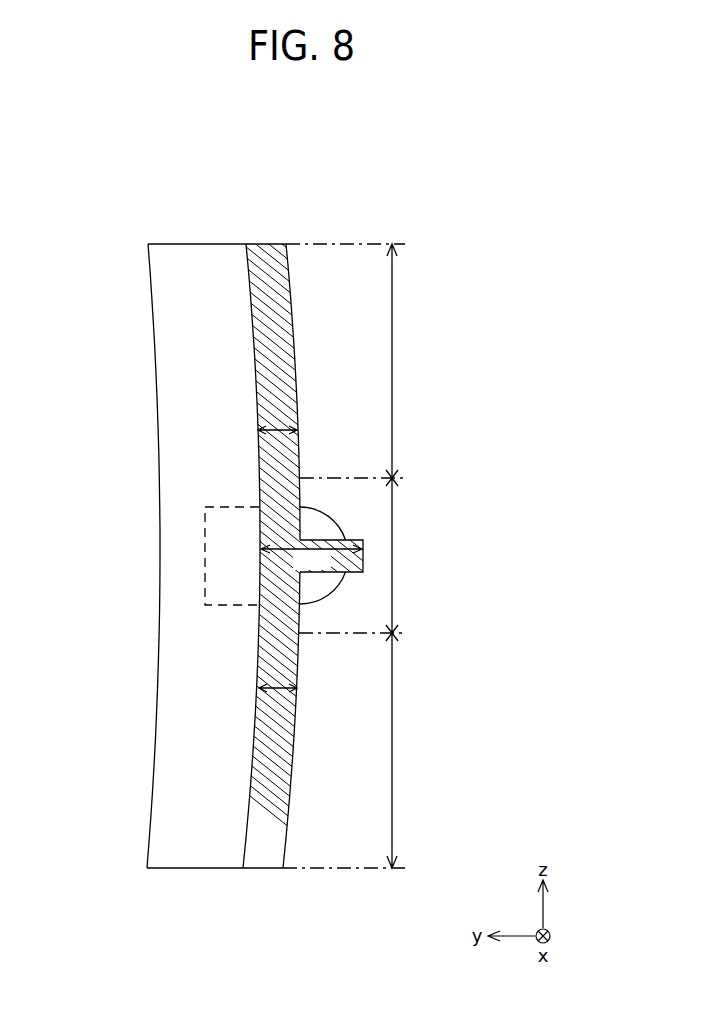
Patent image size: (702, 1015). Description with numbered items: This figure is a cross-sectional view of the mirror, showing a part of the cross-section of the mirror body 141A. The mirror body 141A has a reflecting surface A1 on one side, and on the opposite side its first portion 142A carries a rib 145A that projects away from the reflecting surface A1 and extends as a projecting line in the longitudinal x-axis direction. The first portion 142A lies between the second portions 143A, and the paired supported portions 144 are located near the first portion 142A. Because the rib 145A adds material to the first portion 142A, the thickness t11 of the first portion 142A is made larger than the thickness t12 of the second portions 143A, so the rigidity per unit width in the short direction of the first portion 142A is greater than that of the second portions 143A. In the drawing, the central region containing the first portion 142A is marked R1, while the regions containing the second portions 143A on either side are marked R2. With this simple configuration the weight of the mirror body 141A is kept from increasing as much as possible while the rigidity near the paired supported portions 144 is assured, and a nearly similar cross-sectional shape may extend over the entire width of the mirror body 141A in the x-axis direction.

The mirror body 141A is at (160, 283).
The first portion 142A is at (262, 620).
The second portions 143A is at (252, 348).
The supported portions 144 is at (237, 556).
The rib 145A is at (336, 547).
The reflecting surface A1 is at (250, 435).
The thickness of first portion t11 is at (311, 558).
The thickness of second portions t12 is at (283, 433).
The region R1 is at (367, 555).
The region R2 is at (359, 556).